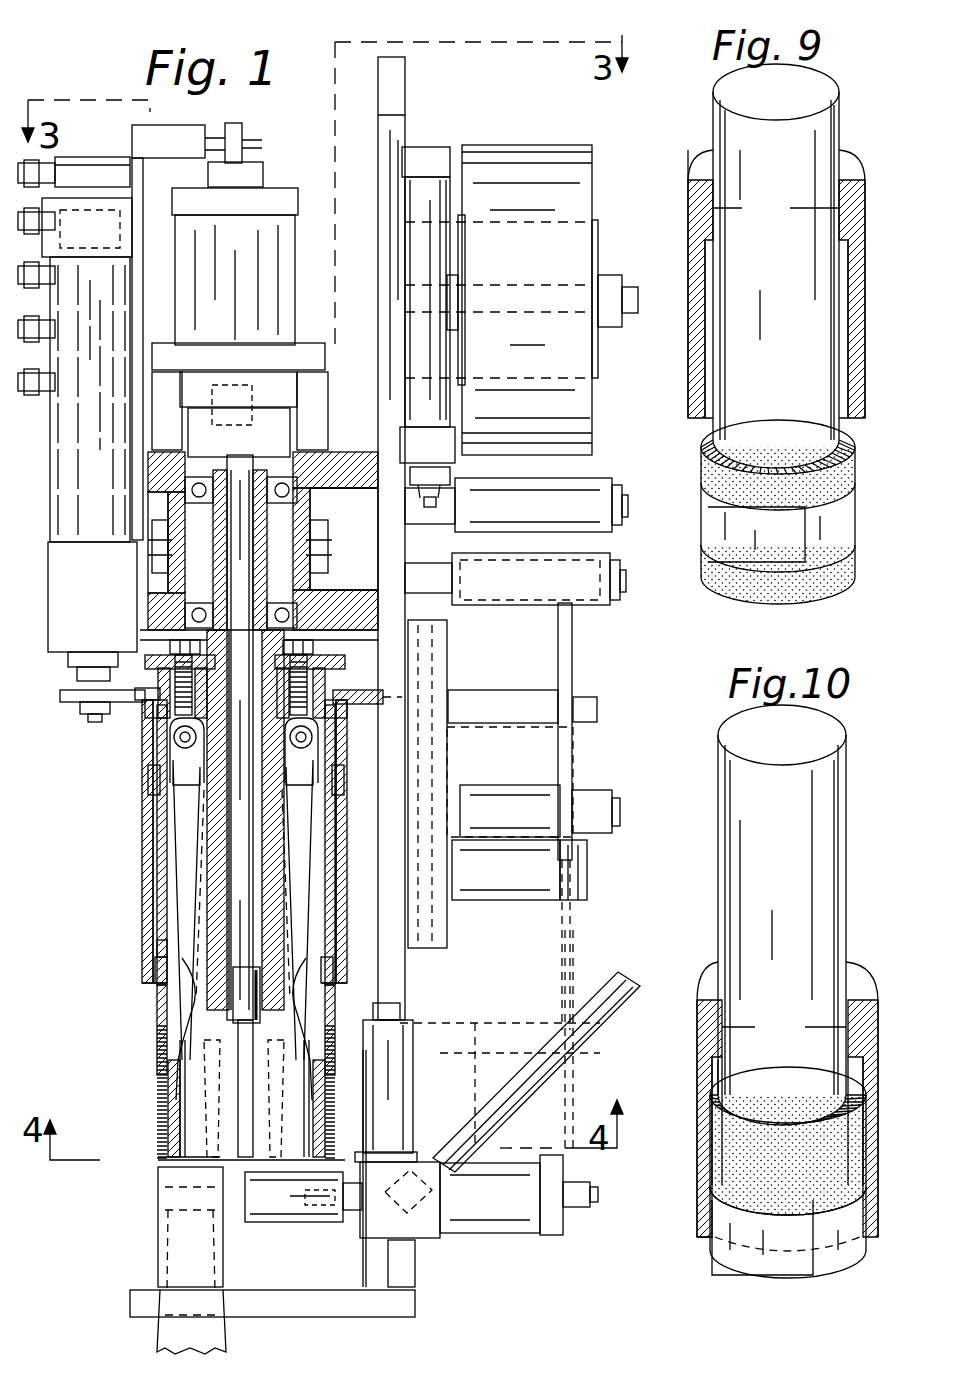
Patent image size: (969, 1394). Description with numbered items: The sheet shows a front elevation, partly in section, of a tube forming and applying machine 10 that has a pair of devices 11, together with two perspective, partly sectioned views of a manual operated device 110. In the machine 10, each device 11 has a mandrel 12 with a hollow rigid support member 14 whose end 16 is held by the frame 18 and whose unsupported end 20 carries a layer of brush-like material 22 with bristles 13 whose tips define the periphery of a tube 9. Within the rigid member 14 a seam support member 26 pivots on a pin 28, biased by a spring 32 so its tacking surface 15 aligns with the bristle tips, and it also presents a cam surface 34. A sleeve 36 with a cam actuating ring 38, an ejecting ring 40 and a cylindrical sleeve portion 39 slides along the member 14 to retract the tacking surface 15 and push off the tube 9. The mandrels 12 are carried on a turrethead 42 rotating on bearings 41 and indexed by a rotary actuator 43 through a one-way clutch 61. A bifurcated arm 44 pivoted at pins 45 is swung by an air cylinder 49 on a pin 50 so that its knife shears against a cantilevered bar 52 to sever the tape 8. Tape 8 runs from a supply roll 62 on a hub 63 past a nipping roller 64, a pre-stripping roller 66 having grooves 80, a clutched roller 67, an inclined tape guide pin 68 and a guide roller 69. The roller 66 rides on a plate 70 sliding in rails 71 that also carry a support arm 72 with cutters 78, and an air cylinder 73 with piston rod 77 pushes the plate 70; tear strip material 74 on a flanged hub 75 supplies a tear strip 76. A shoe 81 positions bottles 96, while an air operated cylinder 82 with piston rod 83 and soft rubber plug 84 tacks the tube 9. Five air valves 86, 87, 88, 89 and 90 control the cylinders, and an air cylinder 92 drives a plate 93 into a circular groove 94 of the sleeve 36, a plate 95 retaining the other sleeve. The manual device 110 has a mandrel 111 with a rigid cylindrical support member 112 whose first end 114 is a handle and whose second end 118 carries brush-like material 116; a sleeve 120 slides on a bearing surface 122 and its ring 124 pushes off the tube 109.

In FIG. 1, the tape 8 is at (598, 924).
In FIG. 1, the tube 9 is at (158, 1232).
In FIG. 1, the machine 10 is at (422, 104).
In FIG. 1, the devices 11 is at (142, 835).
In FIG. 1, the mandrel 12 is at (340, 999).
In FIG. 1, the bristles 13 is at (158, 1069).
In FIG. 1, the rigid support member 14 is at (335, 915).
In FIG. 1, the tacking surface 15 is at (265, 1137).
In FIG. 1, the end 16 is at (152, 688).
In FIG. 1, the frame 18 is at (358, 462).
In FIG. 1, the unsupported end 20 is at (160, 1163).
In FIG. 1, the brush-like material 22 is at (168, 1121).
In FIG. 1, the seam support member 26 is at (204, 836).
In FIG. 1, the pin 28 is at (244, 750).
In FIG. 1, the spring 32 is at (178, 991).
In FIG. 1, the cam surface 34 is at (264, 848).
In FIG. 1, the sleeve 36 is at (142, 882).
In FIG. 1, the cam actuating ring 38 is at (148, 776).
In FIG. 1, the cylindrical sleeve portion 39 is at (155, 969).
In FIG. 1, the ejecting ring 40 is at (160, 948).
In FIG. 1, the bearings 41 is at (290, 488).
In FIG. 1, the turrethead 42 is at (295, 641).
In FIG. 1, the rotary actuator 43 is at (224, 258).
In FIG. 1, the bifurcated arm 44 is at (322, 576).
In FIG. 1, the pins 45 is at (152, 558).
In FIG. 1, the air cylinder 49 is at (265, 178).
In FIG. 1, the pin 50 is at (248, 143).
In FIG. 1, the cantilevered bar 52 is at (258, 996).
In FIG. 1, the one-way clutch 61 is at (250, 432).
In FIG. 1, the supply roll 62 is at (512, 152).
In FIG. 1, the hub 63 is at (467, 345).
In FIG. 1, the nipping roller 64 is at (588, 516).
In FIG. 1, the pre-stripping roller 66 is at (505, 787).
In FIG. 1, the clutched roller 67 is at (550, 587).
In FIG. 1, the tape guide pin 68 is at (512, 1104).
In FIG. 1, the guide roller 69 is at (398, 1096).
In FIG. 1, the plate 70 is at (450, 751).
In FIG. 1, the rails 71 is at (412, 661).
In FIG. 1, the support arm 72 is at (505, 877).
In FIG. 1, the air cylinder 73 is at (420, 213).
In FIG. 1, the tear strip material 74 is at (572, 637).
In FIG. 1, the flanged hub 75 is at (565, 694).
In FIG. 1, the tear strip 76 is at (572, 941).
In FIG. 1, the piston rod 77 is at (449, 514).
In FIG. 1, the cutters 78 is at (570, 880).
In FIG. 1, the grooves 80 is at (571, 808).
In FIG. 1, the shoe 81 is at (278, 1300).
In FIG. 1, the air operated cylinder 82 is at (474, 1211).
In FIG. 1, the piston rod 83 is at (350, 1212).
In FIG. 1, the soft rubber plug 84 is at (262, 1206).
In FIG. 1, the air valve 86 is at (118, 162).
In FIG. 1, the air valve 87 is at (46, 206).
In FIG. 1, the air valve 88 is at (46, 258).
In FIG. 1, the air valve 89 is at (46, 312).
In FIG. 1, the air valve 90 is at (46, 362).
In FIG. 1, the air cylinder 92 is at (100, 487).
In FIG. 1, the plate 93 is at (60, 698).
In FIG. 1, the circular groove 94 is at (147, 712).
In FIG. 1, the plate 95 is at (352, 704).
In FIG. 1, the bottles 96 is at (158, 1334).
In FIG. 9, the tube 109 is at (835, 516).
In FIG. 10, the tube 109 is at (780, 1272).
In FIG. 9, the manual operated device 110 is at (698, 150).
In FIG. 10, the manual operated device 110 is at (722, 1270).
In FIG. 9, the mandrel 111 is at (755, 419).
In FIG. 10, the mandrel 111 is at (720, 930).
In FIG. 9, the rigid cylindrical support member 112 is at (790, 357).
In FIG. 10, the rigid cylindrical support member 112 is at (812, 880).
In FIG. 9, the first end 114 is at (830, 141).
In FIG. 10, the first end 114 is at (832, 796).
In FIG. 9, the brush-like material 116 is at (848, 468).
In FIG. 10, the brush-like material 116 is at (725, 1158).
In FIG. 9, the second end 118 is at (800, 599).
In FIG. 10, the second end 118 is at (866, 1246).
In FIG. 9, the sleeve 120 is at (690, 276).
In FIG. 10, the sleeve 120 is at (697, 1118).
In FIG. 9, the bearing surface 122 is at (776, 209).
In FIG. 10, the bearing surface 122 is at (784, 1027).
In FIG. 9, the ring 124 is at (848, 352).
In FIG. 10, the ring 124 is at (866, 1181).